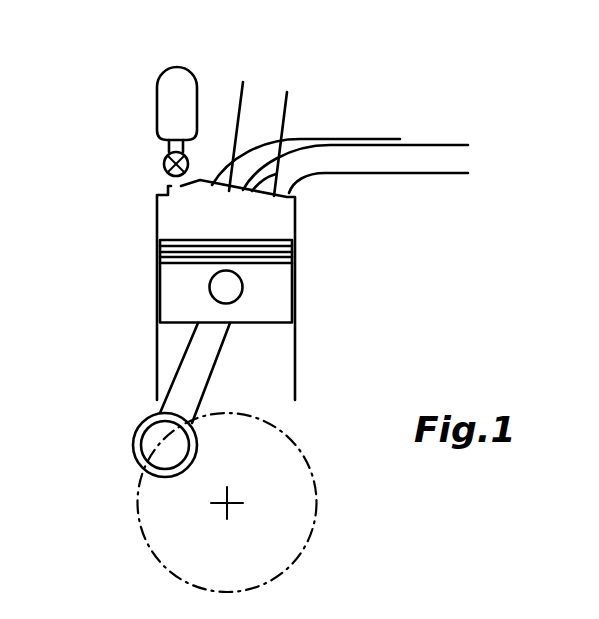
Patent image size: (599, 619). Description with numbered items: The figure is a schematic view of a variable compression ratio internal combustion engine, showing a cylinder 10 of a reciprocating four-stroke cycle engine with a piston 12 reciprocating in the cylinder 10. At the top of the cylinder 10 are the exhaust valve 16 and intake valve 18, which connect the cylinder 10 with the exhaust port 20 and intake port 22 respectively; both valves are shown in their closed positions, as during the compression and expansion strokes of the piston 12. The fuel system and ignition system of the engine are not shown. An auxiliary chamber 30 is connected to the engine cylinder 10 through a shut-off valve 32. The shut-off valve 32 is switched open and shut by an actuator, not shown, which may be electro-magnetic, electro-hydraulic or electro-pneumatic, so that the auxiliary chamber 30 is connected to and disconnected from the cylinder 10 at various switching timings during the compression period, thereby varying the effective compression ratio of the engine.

The cylinder 10 is at (271, 220).
The piston 12 is at (271, 277).
The exhaust valve 16 is at (242, 93).
The intake valve 18 is at (283, 127).
The exhaust port 20 is at (358, 138).
The intake port 22 is at (432, 153).
The auxiliary chamber 30 is at (172, 105).
The shut-off valve 32 is at (163, 164).